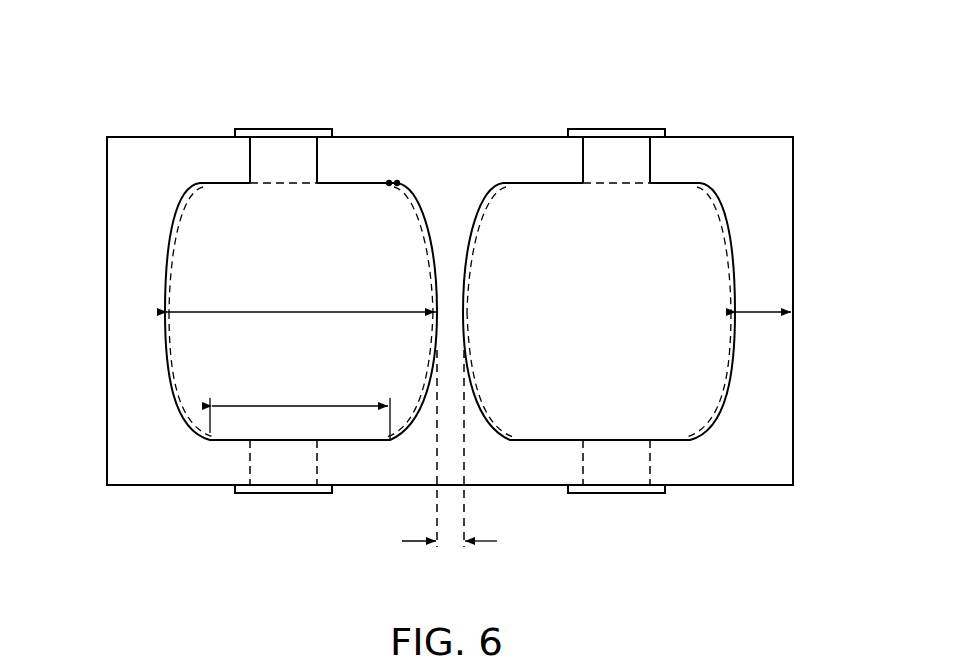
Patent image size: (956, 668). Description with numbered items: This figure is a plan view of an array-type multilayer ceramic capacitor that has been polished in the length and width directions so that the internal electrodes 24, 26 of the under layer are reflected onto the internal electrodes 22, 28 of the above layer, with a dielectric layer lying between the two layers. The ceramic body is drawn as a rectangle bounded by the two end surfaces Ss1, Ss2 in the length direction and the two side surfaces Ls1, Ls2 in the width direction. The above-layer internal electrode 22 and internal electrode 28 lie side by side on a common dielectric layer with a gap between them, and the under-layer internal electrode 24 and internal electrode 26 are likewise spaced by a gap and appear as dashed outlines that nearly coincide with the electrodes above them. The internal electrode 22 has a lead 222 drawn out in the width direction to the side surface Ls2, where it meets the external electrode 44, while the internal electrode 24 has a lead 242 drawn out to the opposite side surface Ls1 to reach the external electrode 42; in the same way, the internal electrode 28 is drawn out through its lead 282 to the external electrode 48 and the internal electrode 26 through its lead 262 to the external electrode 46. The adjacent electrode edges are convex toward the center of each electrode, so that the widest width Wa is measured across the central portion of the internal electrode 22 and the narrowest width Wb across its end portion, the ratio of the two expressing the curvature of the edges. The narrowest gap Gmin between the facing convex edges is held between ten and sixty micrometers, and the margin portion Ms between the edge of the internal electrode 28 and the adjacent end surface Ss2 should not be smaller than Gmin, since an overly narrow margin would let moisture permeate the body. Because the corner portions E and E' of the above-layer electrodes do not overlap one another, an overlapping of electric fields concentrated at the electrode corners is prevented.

The internal electrode 22 is at (193, 235).
The internal electrode 24 is at (177, 395).
The internal electrode 26 is at (727, 395).
The internal electrode 28 is at (707, 235).
The lead 222 is at (262, 160).
The lead 242 is at (260, 460).
The second lower neck portion 262 is at (640, 460).
The second upper neck portion 282 is at (640, 160).
The external electrode 42 is at (282, 493).
The external electrode 44 is at (283, 129).
The external electrode 46 is at (612, 493).
The external electrode 48 is at (615, 129).
The corner portion E is at (392, 122).
The corner portion E' is at (366, 122).
The end surface Ss1 is at (107, 240).
The end surface Ss2 is at (793, 240).
The side surface Ls1 is at (373, 487).
The side surface Ls2 is at (450, 137).
The widest width Wa is at (301, 298).
The narrowest width Wb is at (300, 409).
The margin portion Ms is at (763, 313).
The narrowest gap Gmin is at (449, 462).